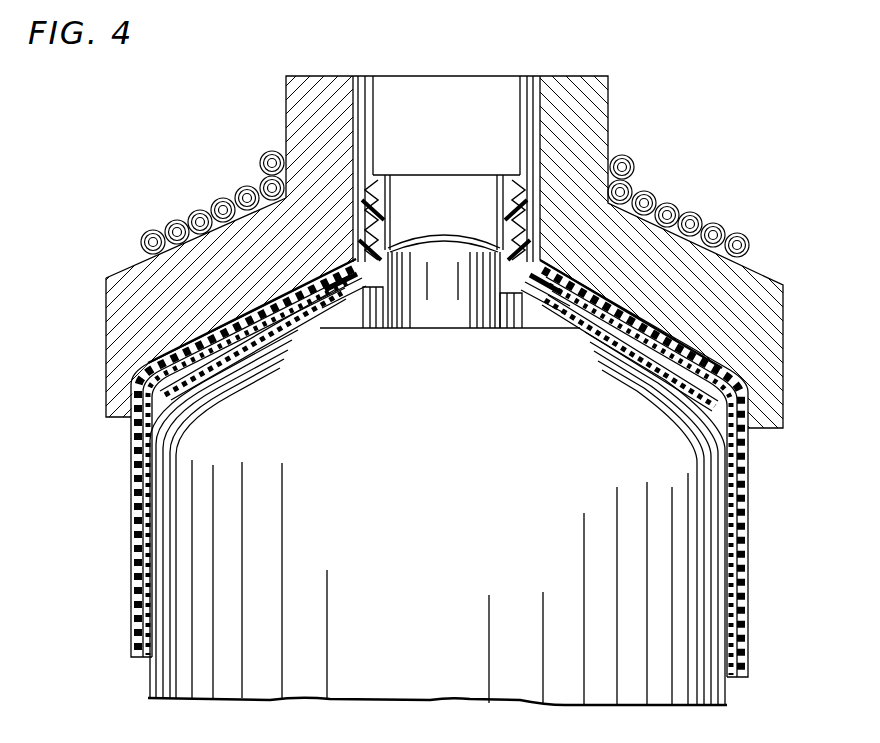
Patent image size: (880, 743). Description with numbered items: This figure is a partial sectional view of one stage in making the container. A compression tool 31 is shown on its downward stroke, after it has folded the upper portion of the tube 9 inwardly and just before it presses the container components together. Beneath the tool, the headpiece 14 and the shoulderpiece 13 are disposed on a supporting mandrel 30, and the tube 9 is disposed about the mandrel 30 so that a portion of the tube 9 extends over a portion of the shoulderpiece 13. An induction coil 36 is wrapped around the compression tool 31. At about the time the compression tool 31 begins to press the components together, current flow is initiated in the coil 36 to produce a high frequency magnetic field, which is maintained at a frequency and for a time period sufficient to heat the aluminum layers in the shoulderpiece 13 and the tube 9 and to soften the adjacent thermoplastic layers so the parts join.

The tube 9 is at (126, 503).
The shoulderpiece 13 is at (250, 350).
The headpiece 14 is at (538, 207).
The supporting mandrel 30 is at (707, 438).
The compression tool 31 is at (783, 352).
The induction coil 36 is at (672, 208).